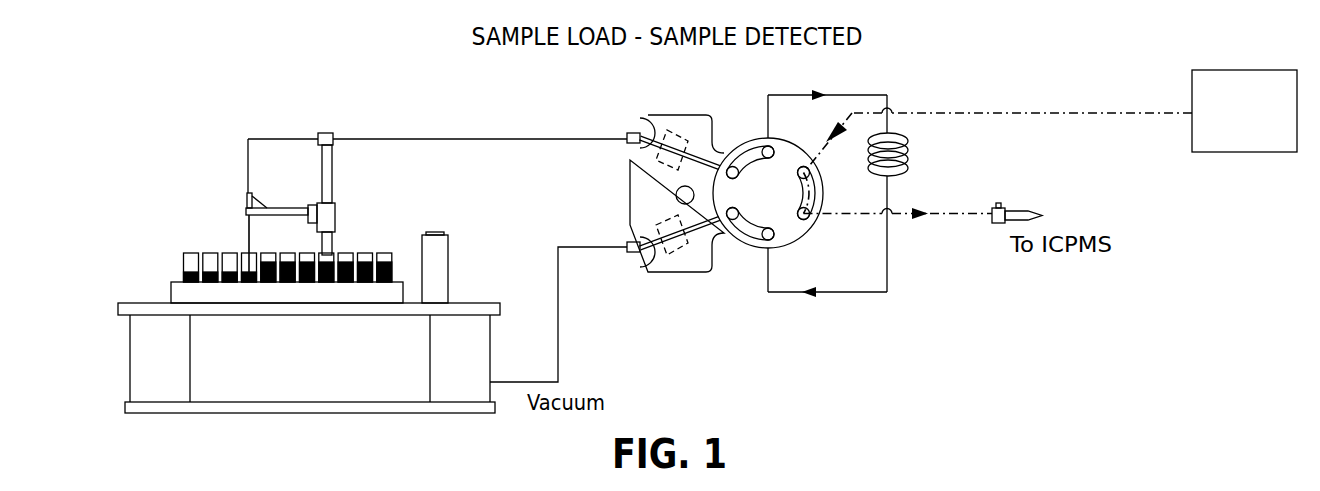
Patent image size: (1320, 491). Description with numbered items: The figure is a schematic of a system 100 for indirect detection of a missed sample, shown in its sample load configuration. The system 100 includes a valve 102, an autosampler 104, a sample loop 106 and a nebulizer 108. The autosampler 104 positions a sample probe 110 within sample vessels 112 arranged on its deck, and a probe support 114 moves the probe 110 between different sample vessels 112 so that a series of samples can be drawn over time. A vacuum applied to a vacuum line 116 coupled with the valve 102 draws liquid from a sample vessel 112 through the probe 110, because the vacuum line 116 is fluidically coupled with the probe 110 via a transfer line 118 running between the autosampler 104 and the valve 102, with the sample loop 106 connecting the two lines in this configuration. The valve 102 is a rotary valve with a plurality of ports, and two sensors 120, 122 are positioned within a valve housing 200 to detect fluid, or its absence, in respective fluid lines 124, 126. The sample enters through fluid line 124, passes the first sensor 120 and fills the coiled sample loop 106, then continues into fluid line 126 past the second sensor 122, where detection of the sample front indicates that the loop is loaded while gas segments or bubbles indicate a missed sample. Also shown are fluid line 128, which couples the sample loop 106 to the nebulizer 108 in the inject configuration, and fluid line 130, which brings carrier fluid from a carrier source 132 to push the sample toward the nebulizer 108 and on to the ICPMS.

The system 100 is at (352, 106).
The valve 102 is at (735, 281).
The autosampler 104 is at (127, 251).
The sample loop 106 is at (908, 152).
The nebulizer 108 is at (1000, 203).
The sample probe 110 is at (247, 236).
The sample vessels 112 is at (359, 237).
The probe support 114 is at (290, 208).
The vacuum line 116 is at (560, 348).
The transfer line 118 is at (481, 131).
The first sensor 120 is at (677, 131).
The second sensor 122 is at (676, 262).
The fluid line 124 is at (647, 121).
The fluid line 126 is at (647, 265).
The fluid line 128 is at (965, 217).
The fluid line 130 is at (1052, 110).
The carrier source 132 is at (1243, 155).
The valve housing 200 is at (630, 195).